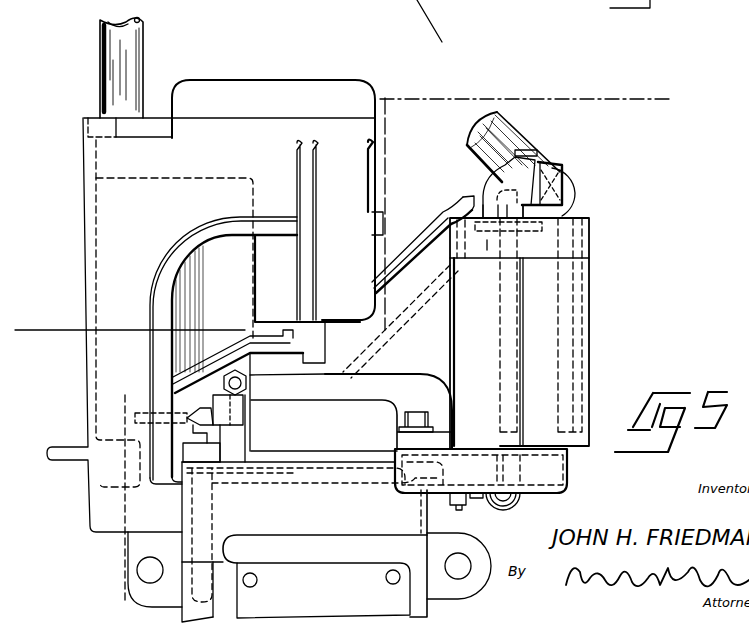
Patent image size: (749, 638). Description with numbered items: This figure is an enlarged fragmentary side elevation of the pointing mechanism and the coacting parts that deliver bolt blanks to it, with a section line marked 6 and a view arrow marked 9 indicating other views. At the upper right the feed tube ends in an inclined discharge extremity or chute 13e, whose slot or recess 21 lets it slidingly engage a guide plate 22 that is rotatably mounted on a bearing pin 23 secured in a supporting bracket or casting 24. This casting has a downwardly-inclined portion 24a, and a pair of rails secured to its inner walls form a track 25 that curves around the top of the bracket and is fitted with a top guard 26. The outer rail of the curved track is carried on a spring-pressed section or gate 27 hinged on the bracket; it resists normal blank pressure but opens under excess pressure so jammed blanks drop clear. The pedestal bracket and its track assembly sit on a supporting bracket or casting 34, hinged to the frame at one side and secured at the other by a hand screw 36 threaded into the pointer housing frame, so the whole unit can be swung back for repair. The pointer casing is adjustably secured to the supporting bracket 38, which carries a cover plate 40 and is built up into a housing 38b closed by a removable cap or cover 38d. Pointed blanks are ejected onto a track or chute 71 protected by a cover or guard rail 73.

The section line 6- 6 is at (665, 91).
The view direction arrow 9 is at (435, 37).
The inclined discharge extremity or chute 13e is at (505, 128).
The slot or recess 21 is at (540, 160).
The guide plate 22 is at (562, 185).
The bearing pin 23 is at (510, 328).
The supporting bracket or casting 24 is at (595, 332).
The downwardly-inclined portion 24a is at (400, 321).
The track 25 is at (520, 0).
The top guard 26 is at (455, 200).
The spring-pressed section or gate 27 is at (486, 245).
The supporting bracket or casting 34 is at (374, 417).
The hand screw 36 is at (478, 497).
The supporting bracket 38 is at (352, 550).
The housing 38b is at (103, 243).
The removable cap or cover 38d is at (241, 80).
The cover plate 40 is at (320, 583).
The track or chute 71 is at (279, 363).
The cover or guard rail 73 is at (213, 358).